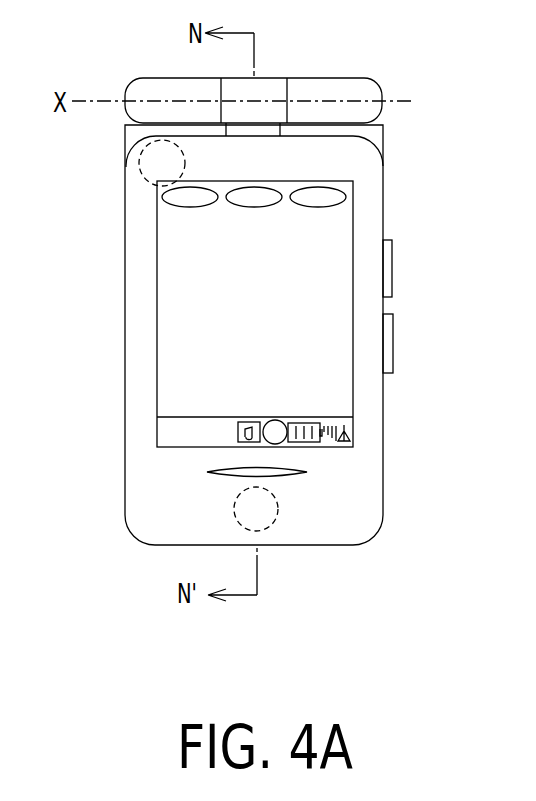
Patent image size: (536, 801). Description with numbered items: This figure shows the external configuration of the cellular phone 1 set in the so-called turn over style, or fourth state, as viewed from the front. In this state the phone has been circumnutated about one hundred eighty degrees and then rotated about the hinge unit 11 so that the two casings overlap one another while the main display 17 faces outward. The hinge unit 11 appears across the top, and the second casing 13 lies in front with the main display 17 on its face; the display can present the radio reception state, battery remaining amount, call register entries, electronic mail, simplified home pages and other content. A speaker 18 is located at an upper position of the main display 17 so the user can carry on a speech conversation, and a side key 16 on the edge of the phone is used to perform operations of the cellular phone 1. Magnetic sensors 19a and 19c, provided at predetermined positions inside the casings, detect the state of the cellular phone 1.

The cellular phone 1 is at (420, 451).
The hinge unit 11 is at (381, 87).
The second casing 13 is at (126, 333).
The side key 16 is at (393, 267).
The main display 17 is at (158, 380).
The speaker 18 is at (207, 472).
The magnetic sensor 19a is at (234, 507).
The magnetic sensor 19c is at (140, 170).